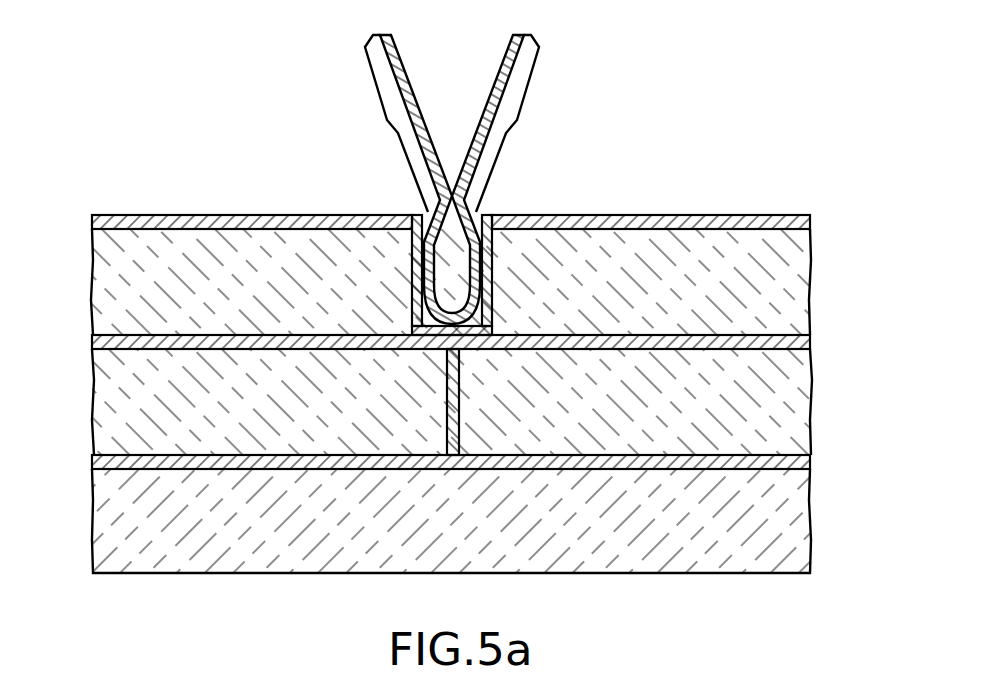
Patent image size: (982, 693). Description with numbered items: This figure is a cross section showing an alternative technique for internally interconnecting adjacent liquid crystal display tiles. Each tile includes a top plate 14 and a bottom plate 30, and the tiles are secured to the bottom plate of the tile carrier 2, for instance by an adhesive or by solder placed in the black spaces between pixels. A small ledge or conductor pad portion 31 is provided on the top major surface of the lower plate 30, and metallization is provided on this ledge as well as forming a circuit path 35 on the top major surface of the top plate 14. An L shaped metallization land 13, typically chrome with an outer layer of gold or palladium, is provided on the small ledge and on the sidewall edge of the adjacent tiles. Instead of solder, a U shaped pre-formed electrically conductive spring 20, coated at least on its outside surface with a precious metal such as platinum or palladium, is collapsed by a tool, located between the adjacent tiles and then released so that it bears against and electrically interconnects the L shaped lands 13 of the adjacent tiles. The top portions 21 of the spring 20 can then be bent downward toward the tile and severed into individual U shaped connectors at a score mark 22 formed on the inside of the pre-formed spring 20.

The bottom plate of the tile carrier 2 is at (693, 530).
The L shaped metallization land 13 is at (490, 216).
The top plate 14 is at (699, 300).
The U shaped pre-formed electrically conductive spring 20 is at (500, 82).
The top portions of the spring 21 is at (453, 123).
The score mark 22 is at (452, 194).
The bottom plate 30 is at (698, 414).
The ledge or conductor pad portion 31 is at (425, 336).
The circuit path 35 is at (140, 215).